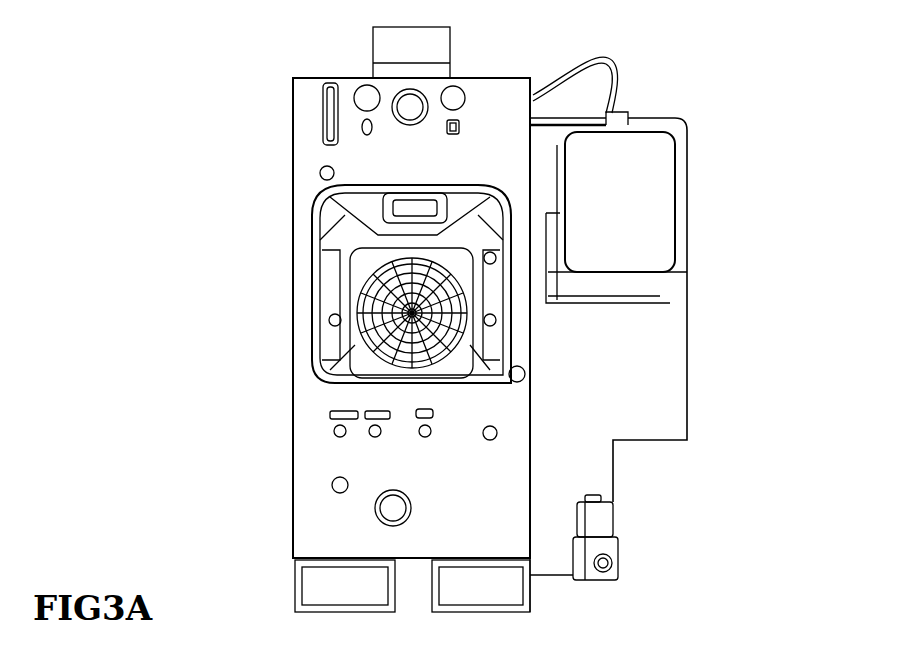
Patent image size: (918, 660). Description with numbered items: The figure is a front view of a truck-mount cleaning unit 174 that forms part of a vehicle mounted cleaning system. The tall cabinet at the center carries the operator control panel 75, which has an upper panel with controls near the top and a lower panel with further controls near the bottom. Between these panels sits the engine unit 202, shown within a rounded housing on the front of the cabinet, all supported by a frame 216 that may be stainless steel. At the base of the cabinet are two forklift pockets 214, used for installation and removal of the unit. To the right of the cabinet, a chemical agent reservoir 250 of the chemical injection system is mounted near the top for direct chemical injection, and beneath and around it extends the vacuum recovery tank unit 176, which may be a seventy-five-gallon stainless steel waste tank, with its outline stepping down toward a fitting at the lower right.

The truck-mount cleaning unit 174 is at (268, 73).
The operator control panel 75 is at (318, 160).
The engine unit 202 is at (350, 268).
The frame 216 is at (293, 333).
The forklift pockets 214 is at (318, 580).
The chemical agent reservoir 250 is at (652, 196).
The vacuum recovery tank unit 176 is at (651, 367).